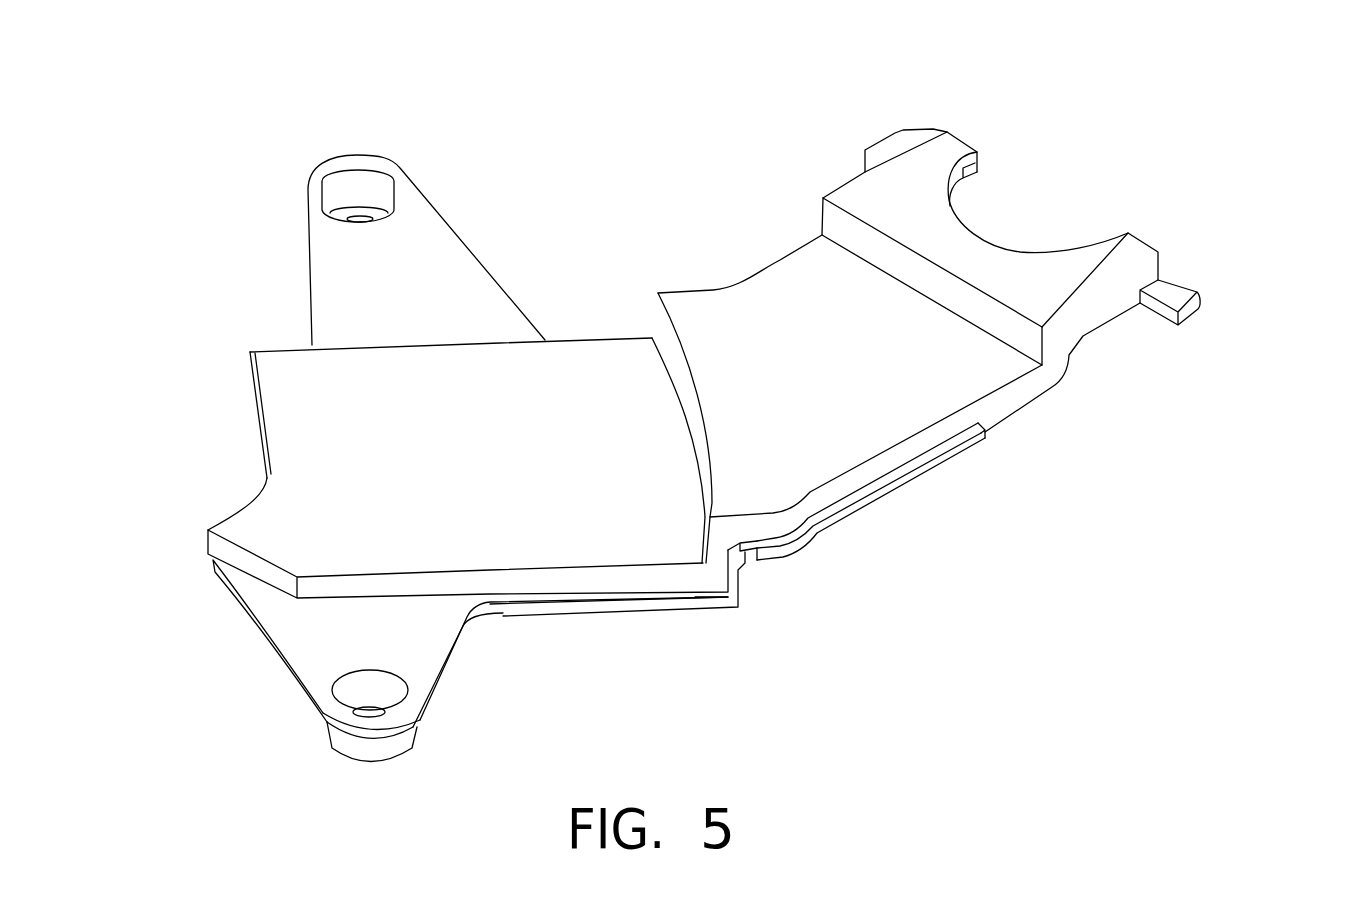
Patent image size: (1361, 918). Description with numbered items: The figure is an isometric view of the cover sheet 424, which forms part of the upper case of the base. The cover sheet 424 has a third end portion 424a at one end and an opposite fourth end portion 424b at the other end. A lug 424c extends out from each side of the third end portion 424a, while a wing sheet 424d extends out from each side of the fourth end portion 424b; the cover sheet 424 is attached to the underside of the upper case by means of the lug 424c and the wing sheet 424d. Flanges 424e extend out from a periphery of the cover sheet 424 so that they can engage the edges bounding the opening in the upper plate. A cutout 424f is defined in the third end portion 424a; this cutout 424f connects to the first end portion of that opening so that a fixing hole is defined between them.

The cover sheet 424 is at (603, 69).
The third end portion 424a is at (965, 257).
The fourth end portion 424b is at (263, 463).
The lug 424c is at (1170, 290).
The wing sheet 424d is at (325, 650).
The flange 424e is at (923, 470).
The cutout 424f is at (983, 197).